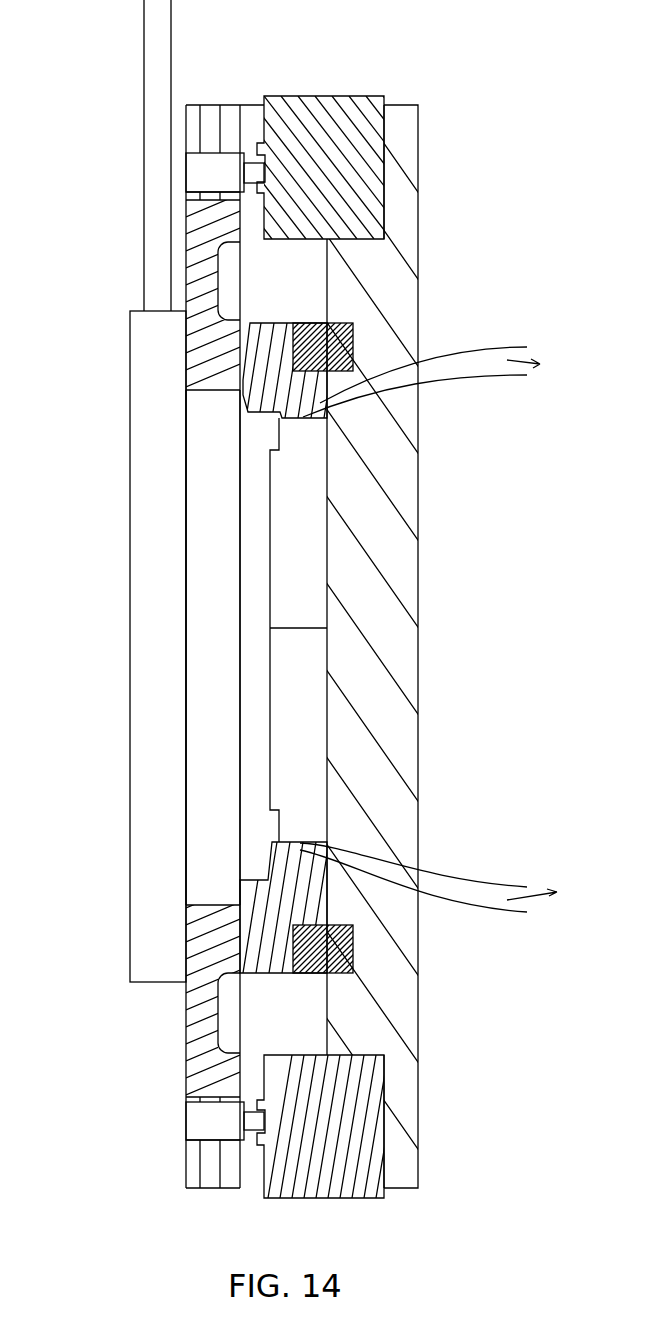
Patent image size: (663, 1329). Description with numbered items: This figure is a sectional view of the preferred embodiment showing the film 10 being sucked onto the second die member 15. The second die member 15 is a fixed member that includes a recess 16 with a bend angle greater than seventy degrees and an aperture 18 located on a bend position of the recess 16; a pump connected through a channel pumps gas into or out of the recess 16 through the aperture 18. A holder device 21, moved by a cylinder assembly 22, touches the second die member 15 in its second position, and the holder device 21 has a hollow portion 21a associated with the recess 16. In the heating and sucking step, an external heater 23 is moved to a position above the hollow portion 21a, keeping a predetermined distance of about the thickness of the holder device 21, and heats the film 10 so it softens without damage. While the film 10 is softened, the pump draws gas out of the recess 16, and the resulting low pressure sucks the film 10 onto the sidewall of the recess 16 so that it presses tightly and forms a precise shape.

The film 10 is at (270, 557).
The second die member 15 is at (432, 1038).
The recess 16 is at (270, 592).
The aperture 18 is at (297, 420).
The holder device 21 is at (170, 1035).
The hollow portion 21a is at (213, 639).
The cylinder assembly 22 is at (170, 173).
The external heater 23 is at (148, 501).